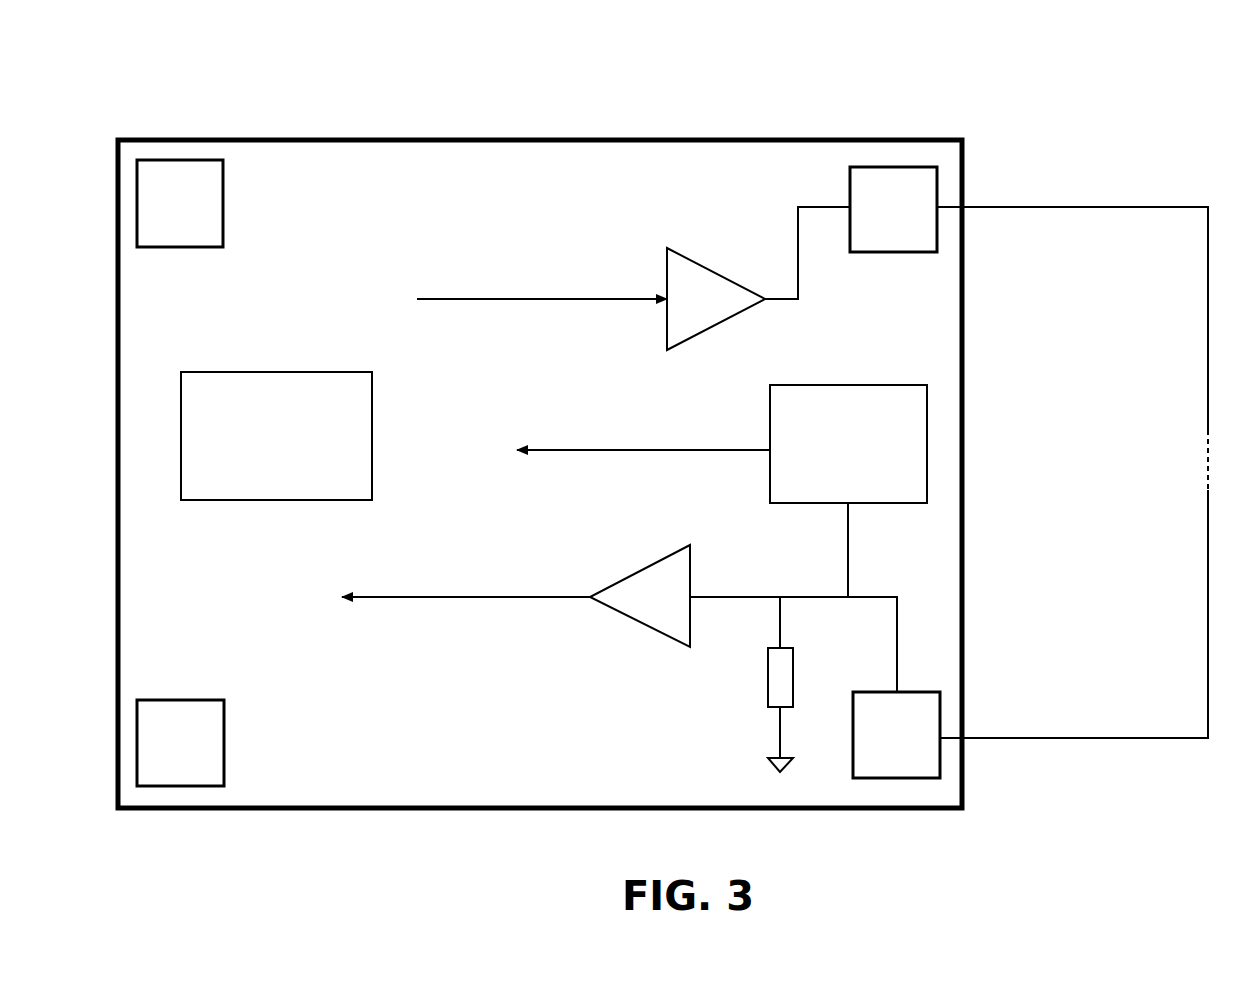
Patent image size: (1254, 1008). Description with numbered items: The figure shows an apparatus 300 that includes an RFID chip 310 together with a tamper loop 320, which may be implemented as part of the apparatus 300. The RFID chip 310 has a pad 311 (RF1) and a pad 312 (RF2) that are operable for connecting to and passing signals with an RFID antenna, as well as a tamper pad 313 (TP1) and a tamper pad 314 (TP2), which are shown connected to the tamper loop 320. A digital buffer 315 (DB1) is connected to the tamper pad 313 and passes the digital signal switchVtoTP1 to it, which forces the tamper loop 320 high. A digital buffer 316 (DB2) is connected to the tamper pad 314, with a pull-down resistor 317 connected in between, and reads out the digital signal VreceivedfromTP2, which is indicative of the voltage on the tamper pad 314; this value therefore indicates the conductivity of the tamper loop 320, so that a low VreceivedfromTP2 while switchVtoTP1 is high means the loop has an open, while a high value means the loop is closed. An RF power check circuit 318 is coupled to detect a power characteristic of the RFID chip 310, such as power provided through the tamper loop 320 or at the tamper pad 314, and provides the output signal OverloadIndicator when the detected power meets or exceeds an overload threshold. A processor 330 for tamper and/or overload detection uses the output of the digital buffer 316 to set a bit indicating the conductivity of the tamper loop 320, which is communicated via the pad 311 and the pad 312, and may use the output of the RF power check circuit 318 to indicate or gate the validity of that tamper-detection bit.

The apparatus 300 is at (1134, 60).
The RFID chip 310 is at (821, 140).
The pad 311 is at (198, 160).
The pad 312 is at (196, 700).
The tamper pad 313 is at (910, 167).
The tamper pad 314 is at (905, 692).
The digital buffer 315 is at (734, 280).
The digital buffer 316 is at (673, 642).
The pull-down resistor 317 is at (788, 648).
The RF power check circuit 318 is at (879, 385).
The tamper loop 320 is at (1053, 207).
The processor 330 is at (341, 372).